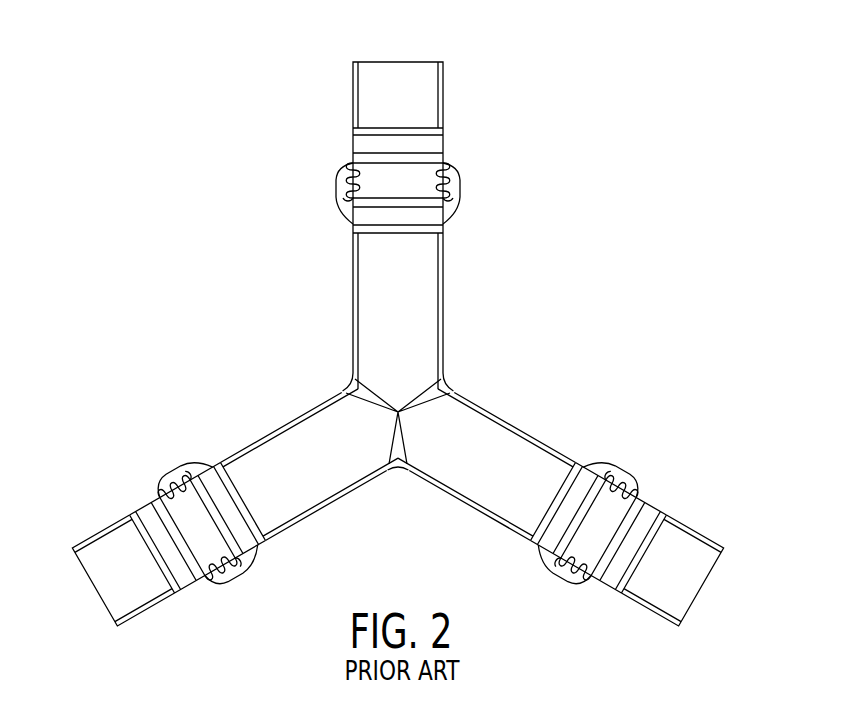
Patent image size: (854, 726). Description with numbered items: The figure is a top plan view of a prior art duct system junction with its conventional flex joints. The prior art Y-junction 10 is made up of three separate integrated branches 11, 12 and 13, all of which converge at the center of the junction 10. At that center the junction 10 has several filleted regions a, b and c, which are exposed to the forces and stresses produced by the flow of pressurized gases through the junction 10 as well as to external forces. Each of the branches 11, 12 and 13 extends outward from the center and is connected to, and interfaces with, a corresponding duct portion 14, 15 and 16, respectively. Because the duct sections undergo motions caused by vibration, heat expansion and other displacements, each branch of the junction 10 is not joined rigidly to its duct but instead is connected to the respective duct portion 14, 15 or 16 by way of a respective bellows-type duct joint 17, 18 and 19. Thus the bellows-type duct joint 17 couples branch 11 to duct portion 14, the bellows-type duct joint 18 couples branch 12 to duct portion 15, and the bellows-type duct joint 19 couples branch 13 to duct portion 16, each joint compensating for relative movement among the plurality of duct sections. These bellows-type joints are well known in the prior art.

The Y-junction 10 is at (454, 359).
The branch 11 is at (385, 308).
The branch 12 is at (298, 483).
The branch 13 is at (487, 477).
The duct portion 14 is at (395, 88).
The duct portion 15 is at (117, 568).
The duct portion 16 is at (678, 572).
The bellows-type duct joint 17 is at (473, 172).
The bellows-type duct joint 18 is at (155, 462).
The bellows-type duct joint 19 is at (632, 458).
The filleted region a is at (398, 465).
The filleted region b is at (445, 385).
The filleted region c is at (352, 385).